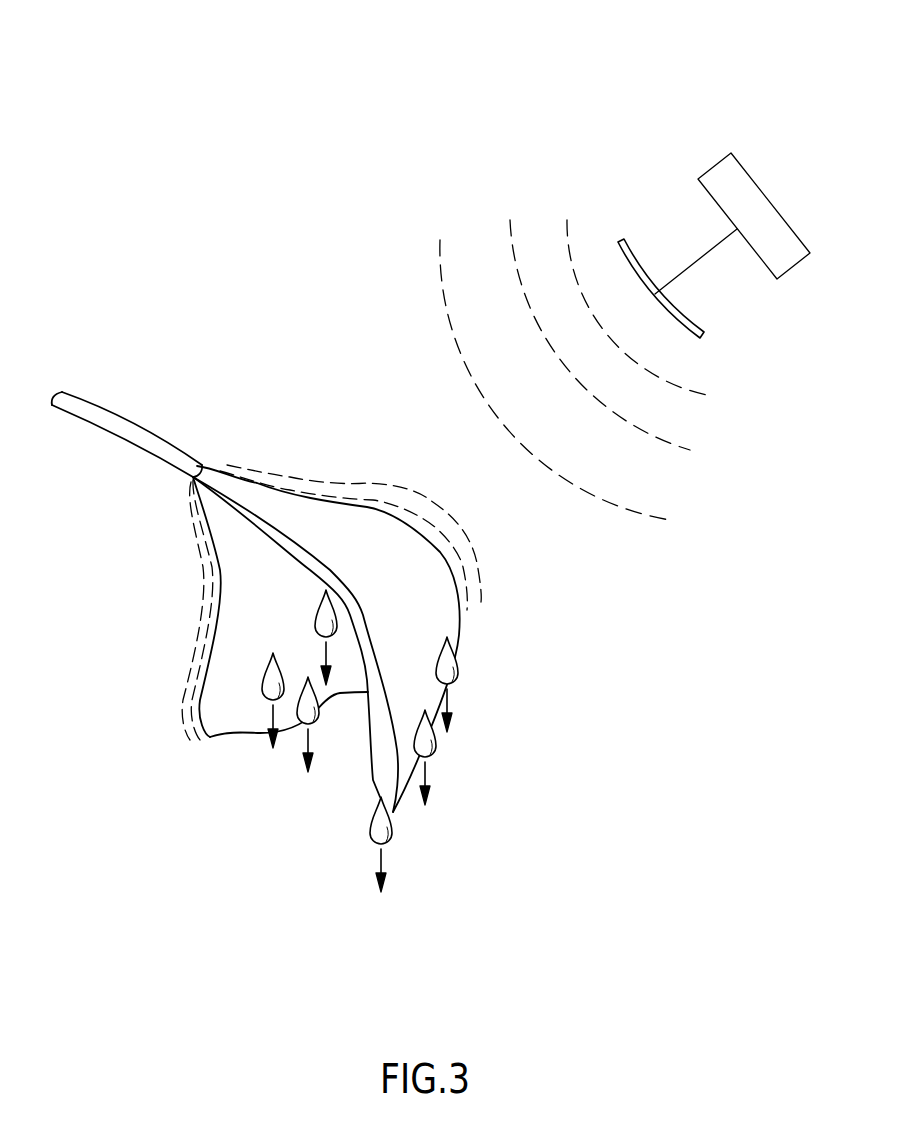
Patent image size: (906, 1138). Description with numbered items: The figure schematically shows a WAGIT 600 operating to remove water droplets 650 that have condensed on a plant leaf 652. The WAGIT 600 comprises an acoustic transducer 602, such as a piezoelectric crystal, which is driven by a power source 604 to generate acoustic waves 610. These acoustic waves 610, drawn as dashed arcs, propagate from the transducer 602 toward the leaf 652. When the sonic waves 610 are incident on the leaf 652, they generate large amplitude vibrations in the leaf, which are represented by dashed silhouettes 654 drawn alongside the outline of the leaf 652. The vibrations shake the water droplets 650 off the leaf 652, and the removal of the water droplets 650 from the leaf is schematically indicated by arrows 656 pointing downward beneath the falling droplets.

The WAGIT 600 is at (598, 58).
The acoustic transducer 602 is at (624, 238).
The power source 604 is at (713, 161).
The acoustic waves 610 is at (567, 253).
The water droplets 650 is at (318, 608).
The plant leaf 652 is at (405, 578).
The dashed silhouettes 654 is at (392, 485).
The arrows 656 is at (425, 775).